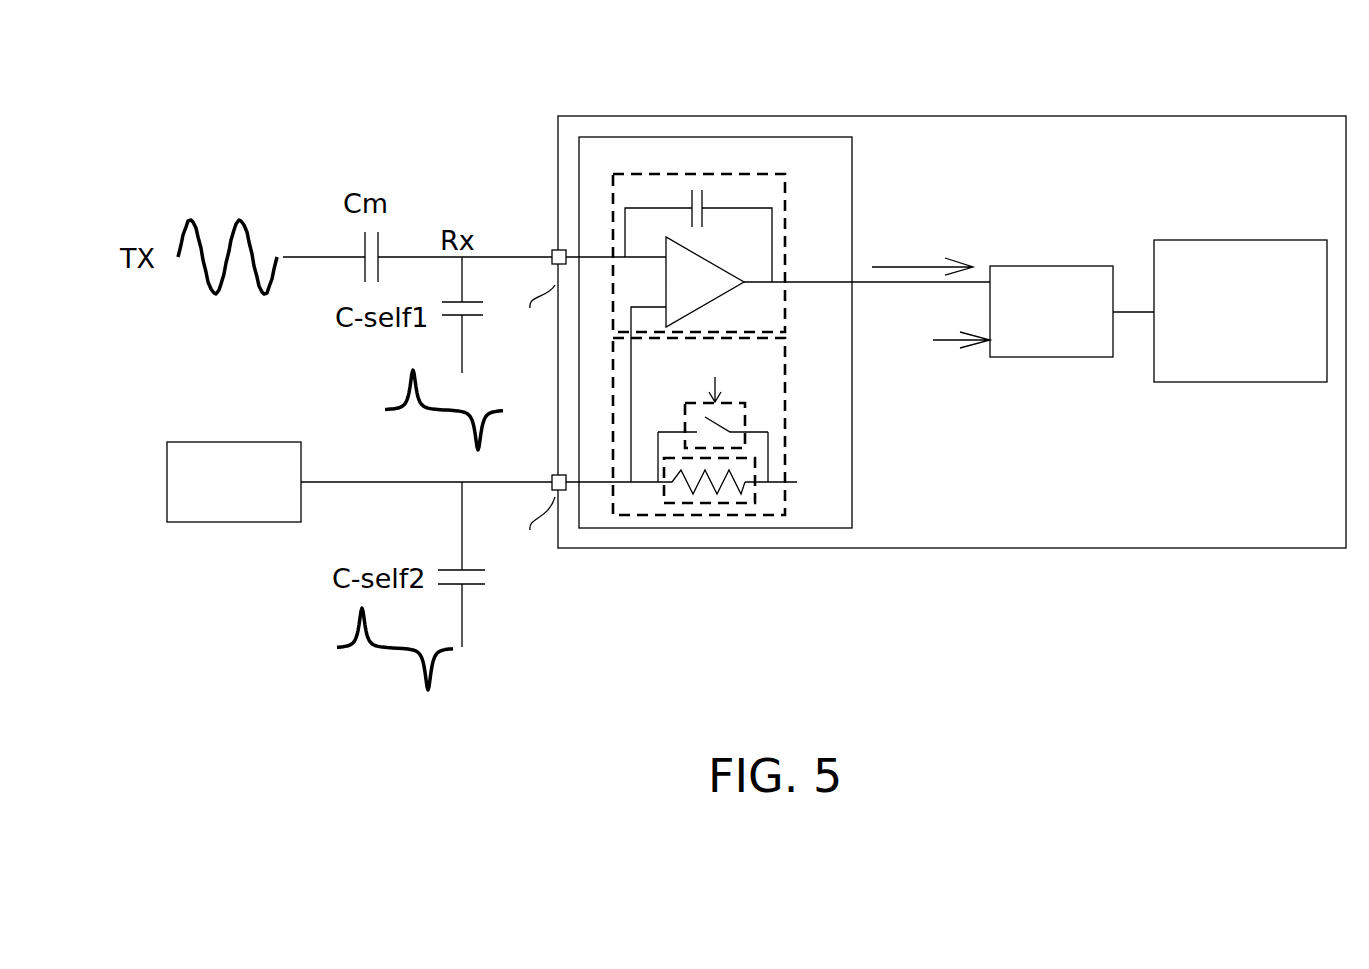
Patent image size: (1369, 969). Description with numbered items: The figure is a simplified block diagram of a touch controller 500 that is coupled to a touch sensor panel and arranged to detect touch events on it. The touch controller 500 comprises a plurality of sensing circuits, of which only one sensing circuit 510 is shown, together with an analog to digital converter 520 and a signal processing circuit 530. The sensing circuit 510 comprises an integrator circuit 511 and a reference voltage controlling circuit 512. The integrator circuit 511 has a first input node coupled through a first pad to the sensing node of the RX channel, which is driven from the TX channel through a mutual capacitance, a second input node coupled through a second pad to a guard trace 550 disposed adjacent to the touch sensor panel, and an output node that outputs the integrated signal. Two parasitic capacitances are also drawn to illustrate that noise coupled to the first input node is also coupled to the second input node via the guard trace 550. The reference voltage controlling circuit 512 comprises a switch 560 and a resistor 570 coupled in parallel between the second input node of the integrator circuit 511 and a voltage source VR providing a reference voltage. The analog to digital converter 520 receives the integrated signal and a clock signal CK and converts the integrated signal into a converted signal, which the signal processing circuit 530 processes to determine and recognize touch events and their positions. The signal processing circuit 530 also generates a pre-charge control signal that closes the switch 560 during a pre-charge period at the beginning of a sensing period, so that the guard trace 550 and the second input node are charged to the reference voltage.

The touch controller 500 is at (982, 116).
The sensing circuit 510 is at (752, 137).
The integrator circuit 511 is at (654, 174).
The reference voltage controlling circuit 512 is at (743, 469).
The analog to digital converter 520 is at (1052, 266).
The signal processing circuit 530 is at (1244, 240).
The guard trace 550 is at (235, 441).
The switch 560 is at (745, 408).
The resistor 570 is at (708, 503).